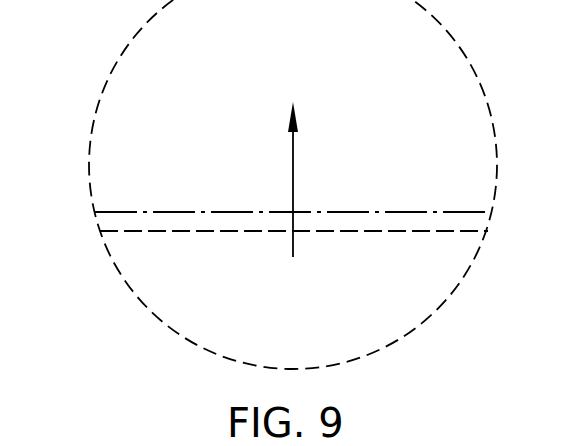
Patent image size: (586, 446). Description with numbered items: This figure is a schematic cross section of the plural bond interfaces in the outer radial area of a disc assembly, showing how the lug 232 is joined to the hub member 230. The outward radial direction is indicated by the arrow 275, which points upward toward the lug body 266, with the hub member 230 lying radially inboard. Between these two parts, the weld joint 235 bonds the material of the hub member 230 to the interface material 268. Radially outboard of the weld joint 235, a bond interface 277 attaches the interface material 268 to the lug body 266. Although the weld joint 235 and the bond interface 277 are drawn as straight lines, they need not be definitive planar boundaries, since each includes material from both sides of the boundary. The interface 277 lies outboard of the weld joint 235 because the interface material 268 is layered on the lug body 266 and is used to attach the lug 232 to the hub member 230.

The lug 232 is at (283, 184).
The lug body 266 is at (320, 60).
The hub member 230 is at (318, 322).
The arrow 275 is at (295, 180).
The bond interface 277 is at (212, 211).
The interface material 268 is at (358, 217).
The weld joint 235 is at (403, 233).